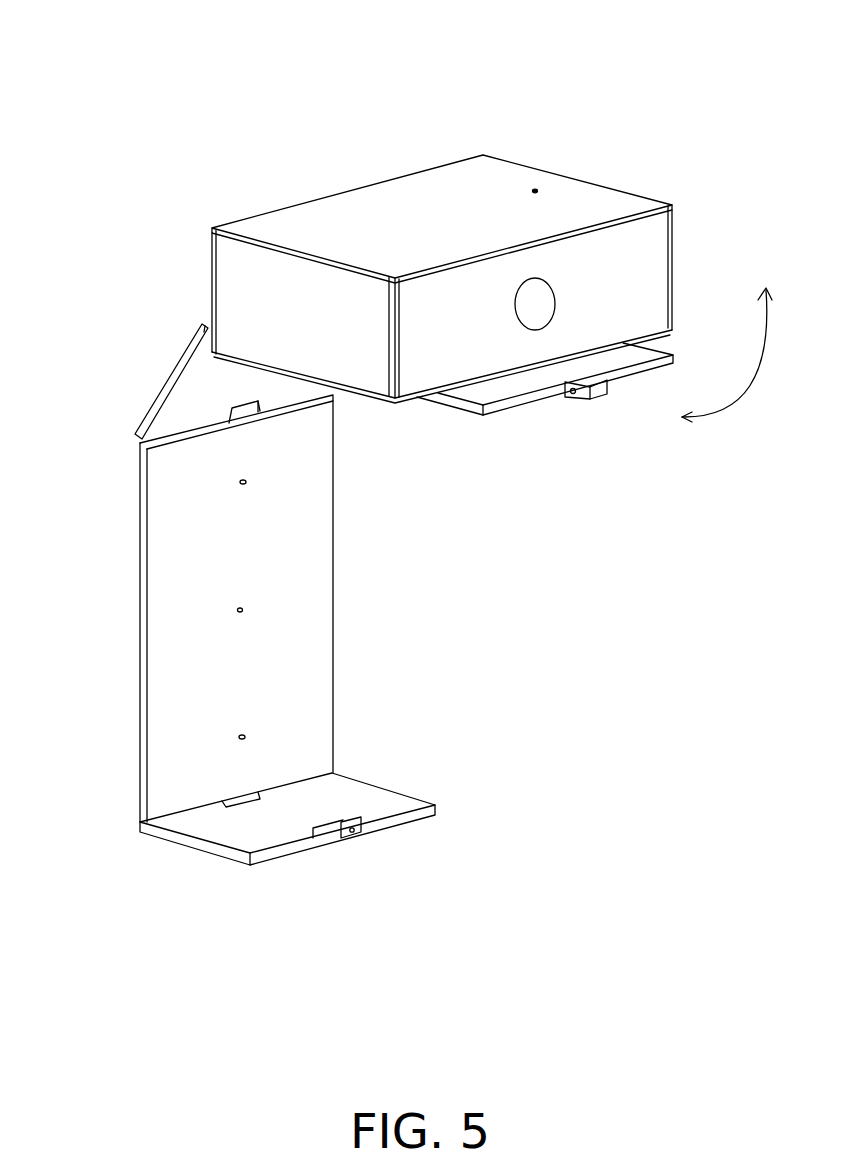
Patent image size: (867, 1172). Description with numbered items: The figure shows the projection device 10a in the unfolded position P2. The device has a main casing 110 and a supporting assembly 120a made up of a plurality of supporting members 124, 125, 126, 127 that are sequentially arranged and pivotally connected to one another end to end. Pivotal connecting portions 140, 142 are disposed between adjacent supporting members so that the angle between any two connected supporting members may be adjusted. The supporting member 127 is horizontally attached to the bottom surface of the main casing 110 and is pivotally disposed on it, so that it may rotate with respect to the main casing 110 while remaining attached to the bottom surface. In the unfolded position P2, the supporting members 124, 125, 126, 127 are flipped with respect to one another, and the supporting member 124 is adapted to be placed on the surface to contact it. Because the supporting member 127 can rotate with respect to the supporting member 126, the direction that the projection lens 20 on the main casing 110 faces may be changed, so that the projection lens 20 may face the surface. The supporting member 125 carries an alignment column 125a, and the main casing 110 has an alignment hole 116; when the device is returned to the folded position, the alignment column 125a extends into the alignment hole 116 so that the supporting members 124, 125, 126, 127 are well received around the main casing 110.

The projection device 10a is at (592, 137).
The main casing 110 is at (666, 277).
The alignment hole 116 is at (348, 242).
The projection lens 20 is at (535, 317).
The supporting assembly 120a is at (110, 6).
The supporting member 124 is at (363, 790).
The supporting member 125 is at (342, 615).
The alignment column 125a is at (240, 737).
The supporting member 126 is at (173, 372).
The supporting member 127 is at (453, 402).
The pivotal connecting portion 140 is at (222, 807).
The pivotal connecting portion 142 is at (230, 428).
The unfolded position P2 is at (617, 771).